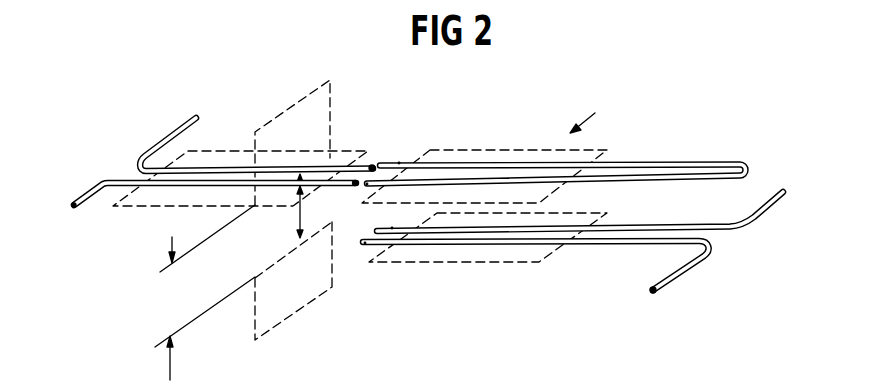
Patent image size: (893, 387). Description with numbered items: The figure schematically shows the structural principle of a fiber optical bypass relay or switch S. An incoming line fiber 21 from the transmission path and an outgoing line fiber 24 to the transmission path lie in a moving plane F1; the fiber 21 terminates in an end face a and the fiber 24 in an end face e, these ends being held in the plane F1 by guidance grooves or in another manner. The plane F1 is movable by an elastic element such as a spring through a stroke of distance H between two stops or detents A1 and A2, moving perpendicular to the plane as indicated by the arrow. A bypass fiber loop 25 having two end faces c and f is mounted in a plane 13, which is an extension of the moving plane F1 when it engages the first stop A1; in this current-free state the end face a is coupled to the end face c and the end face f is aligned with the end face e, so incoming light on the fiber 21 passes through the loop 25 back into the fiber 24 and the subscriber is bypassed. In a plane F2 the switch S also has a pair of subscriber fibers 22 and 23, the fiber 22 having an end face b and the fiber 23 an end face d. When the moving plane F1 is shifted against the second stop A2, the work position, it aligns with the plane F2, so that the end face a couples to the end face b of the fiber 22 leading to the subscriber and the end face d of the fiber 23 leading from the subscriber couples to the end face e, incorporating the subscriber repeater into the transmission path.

The plane 13 is at (471, 152).
The incoming line fiber 21 is at (91, 184).
The subscriber fiber 22 is at (680, 270).
The subscriber fiber 23 is at (753, 215).
The outgoing line fiber 24 is at (188, 118).
The bypass fiber loop 25 is at (699, 143).
The fiber optical bypass relay or switch S is at (591, 115).
The moving plane F1 is at (150, 203).
The plane F2 is at (504, 259).
The first stop A1 is at (331, 121).
The second stop A2 is at (303, 304).
The stroke distance H is at (205, 292).
The end face a is at (351, 186).
The end face b is at (359, 257).
The end face c is at (358, 202).
The end face d is at (396, 212).
The end face e is at (379, 162).
The end face f is at (399, 162).